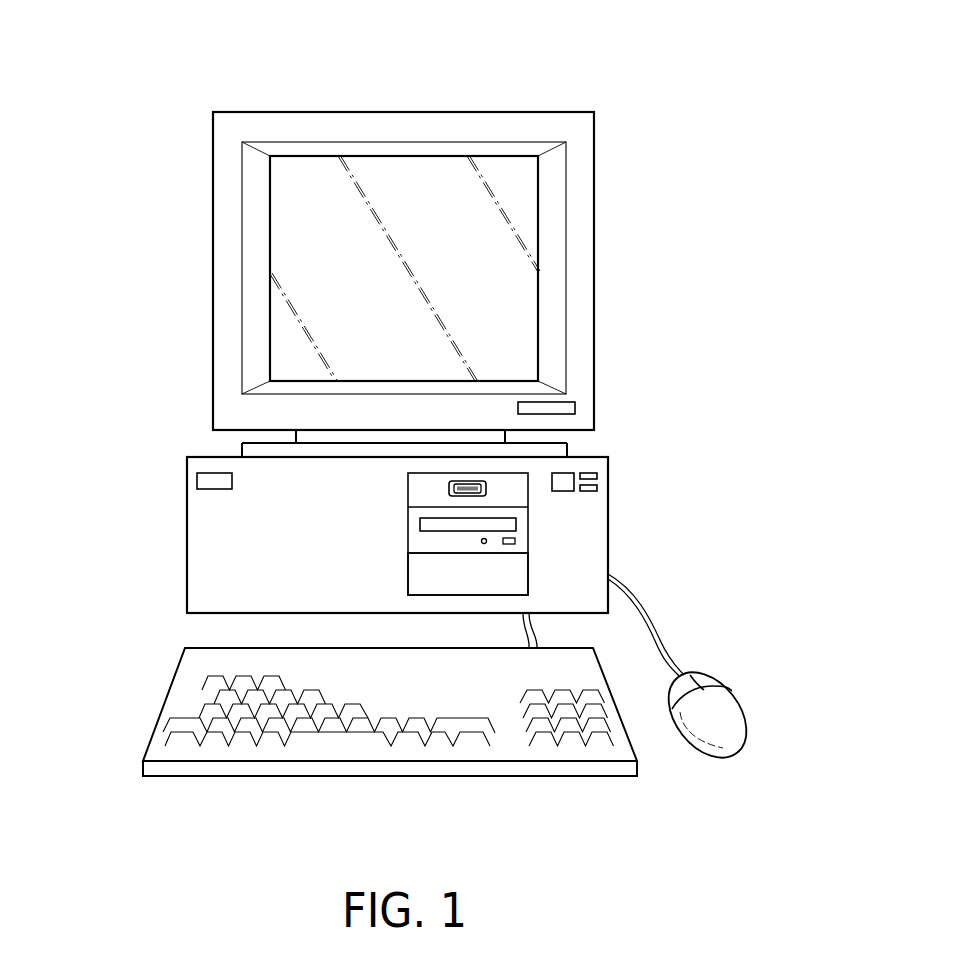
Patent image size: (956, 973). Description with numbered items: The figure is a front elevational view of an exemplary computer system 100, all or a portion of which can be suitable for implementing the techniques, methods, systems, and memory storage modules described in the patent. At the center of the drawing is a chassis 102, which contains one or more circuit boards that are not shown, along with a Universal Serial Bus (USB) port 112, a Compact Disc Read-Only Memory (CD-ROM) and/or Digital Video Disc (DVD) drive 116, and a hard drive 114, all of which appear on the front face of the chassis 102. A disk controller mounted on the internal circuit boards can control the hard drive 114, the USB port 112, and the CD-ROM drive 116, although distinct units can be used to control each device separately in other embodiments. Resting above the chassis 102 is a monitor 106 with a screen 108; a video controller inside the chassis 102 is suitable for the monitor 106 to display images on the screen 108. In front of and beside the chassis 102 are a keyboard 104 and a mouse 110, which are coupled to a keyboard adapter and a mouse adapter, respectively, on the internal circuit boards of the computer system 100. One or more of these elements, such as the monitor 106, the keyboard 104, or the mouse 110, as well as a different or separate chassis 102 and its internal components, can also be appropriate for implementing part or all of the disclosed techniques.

The computer system 100 is at (589, 85).
The chassis 102 is at (187, 537).
The keyboard 104 is at (166, 700).
The monitor 106 is at (290, 112).
The screen 108 is at (320, 273).
The mouse 110 is at (727, 705).
The Universal Serial Bus (USB) port 112 is at (486, 487).
The hard drive 114 is at (518, 572).
The Compact Disc Read-Only Memory (CD-ROM) and/or Digital Video Disc (DVD) drive 116 is at (516, 531).